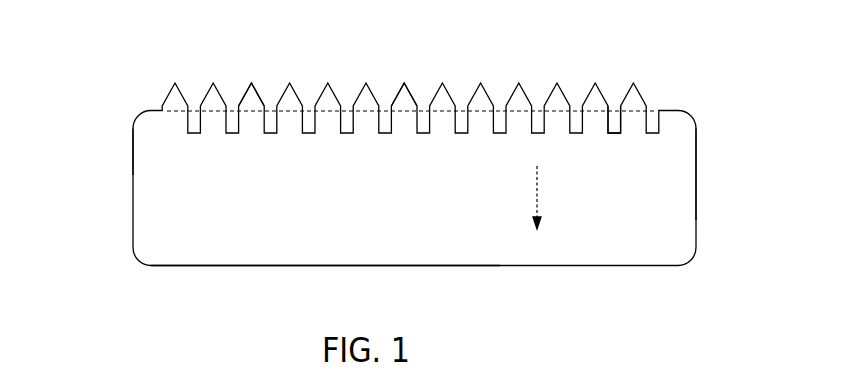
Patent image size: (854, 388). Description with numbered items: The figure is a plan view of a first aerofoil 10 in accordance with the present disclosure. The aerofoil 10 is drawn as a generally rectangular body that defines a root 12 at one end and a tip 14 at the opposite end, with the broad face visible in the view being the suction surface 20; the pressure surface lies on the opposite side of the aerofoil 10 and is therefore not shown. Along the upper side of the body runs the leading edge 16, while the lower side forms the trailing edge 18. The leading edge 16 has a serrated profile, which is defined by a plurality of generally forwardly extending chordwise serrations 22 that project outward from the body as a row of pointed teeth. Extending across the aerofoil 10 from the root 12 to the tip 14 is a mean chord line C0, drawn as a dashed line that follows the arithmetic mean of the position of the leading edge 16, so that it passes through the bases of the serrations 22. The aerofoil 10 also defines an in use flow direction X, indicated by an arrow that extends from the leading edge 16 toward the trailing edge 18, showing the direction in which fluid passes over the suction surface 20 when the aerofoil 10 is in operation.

The aerofoil 10 is at (107, 200).
The root 12 is at (131, 158).
The tip 14 is at (697, 190).
The leading edge 16 is at (421, 85).
The trailing edge 18 is at (388, 267).
The suction surface 20 is at (257, 238).
The chordwise serrations 22 is at (251, 86).
The mean chord line C0 is at (616, 92).
The in use flow direction X is at (537, 184).